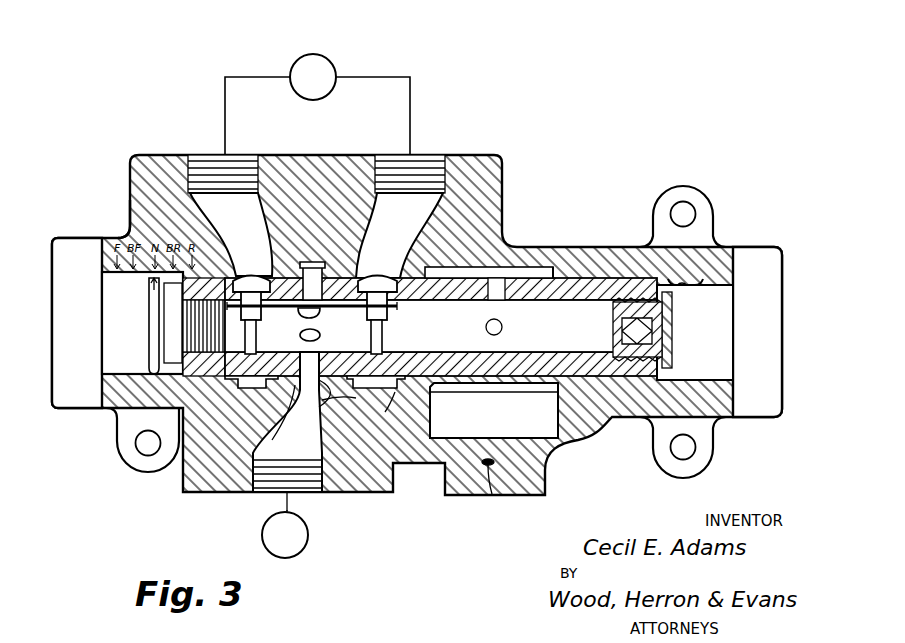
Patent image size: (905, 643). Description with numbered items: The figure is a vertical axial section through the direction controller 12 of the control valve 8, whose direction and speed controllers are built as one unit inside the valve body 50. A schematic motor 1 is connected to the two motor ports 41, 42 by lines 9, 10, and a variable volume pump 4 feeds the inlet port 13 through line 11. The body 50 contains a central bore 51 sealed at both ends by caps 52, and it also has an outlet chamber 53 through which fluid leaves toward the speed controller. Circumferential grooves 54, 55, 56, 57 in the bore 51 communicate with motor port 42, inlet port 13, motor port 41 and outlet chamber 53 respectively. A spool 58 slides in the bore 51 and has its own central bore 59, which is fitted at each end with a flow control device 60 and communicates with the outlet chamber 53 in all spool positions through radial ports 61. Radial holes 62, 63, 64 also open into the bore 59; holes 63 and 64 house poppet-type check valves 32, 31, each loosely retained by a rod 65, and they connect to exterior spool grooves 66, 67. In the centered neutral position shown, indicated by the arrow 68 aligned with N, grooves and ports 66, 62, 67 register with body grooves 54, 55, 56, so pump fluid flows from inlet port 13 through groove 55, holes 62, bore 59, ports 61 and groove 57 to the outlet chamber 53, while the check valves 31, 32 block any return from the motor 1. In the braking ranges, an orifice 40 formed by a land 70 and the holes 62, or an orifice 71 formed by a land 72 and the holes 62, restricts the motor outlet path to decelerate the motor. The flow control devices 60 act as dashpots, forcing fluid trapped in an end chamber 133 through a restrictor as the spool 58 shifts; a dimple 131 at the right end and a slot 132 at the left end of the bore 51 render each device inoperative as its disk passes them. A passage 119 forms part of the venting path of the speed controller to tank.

The motor 1 is at (330, 62).
The variable volume pump 4 is at (302, 555).
The control valve 8 is at (167, 144).
The motor line 9 is at (410, 82).
The motor line 10 is at (225, 84).
The pump line 11 is at (285, 505).
The direction controller 12 is at (114, 216).
The inlet port 13 is at (300, 495).
The poppet-type check valve 31 is at (389, 342).
The poppet-type check valve 32 is at (308, 318).
The orifice 40 is at (319, 420).
The motor port 41 is at (410, 155).
The motor port 42 is at (226, 155).
The valve body 50 is at (322, 195).
The central bore 51 is at (710, 283).
The cap 52 is at (62, 330).
The outlet chamber 53 is at (494, 410).
The circumferential groove 54 is at (292, 415).
The circumferential groove 55 is at (328, 268).
The circumferential groove 56 is at (430, 405).
The circumferential groove 57 is at (505, 267).
The spool 58 is at (555, 270).
The central bore of spool 59 is at (441, 327).
The flow control device 60 is at (147, 329).
The radial port 61 is at (497, 305).
The radial hole 62 is at (320, 332).
The radial hole 63 is at (246, 322).
The radial hole 64 is at (376, 283).
The rod 65 is at (390, 310).
The circumferential groove of spool 66 is at (234, 245).
The circumferential groove of spool 67 is at (400, 245).
The arrow 68 is at (150, 290).
The land 70 is at (322, 428).
The orifice 71 is at (387, 408).
The land 72 is at (360, 392).
The passage 119 is at (497, 495).
The dimple 131 is at (672, 279).
The slot 132 is at (165, 402).
The end chamber 133 is at (715, 371).